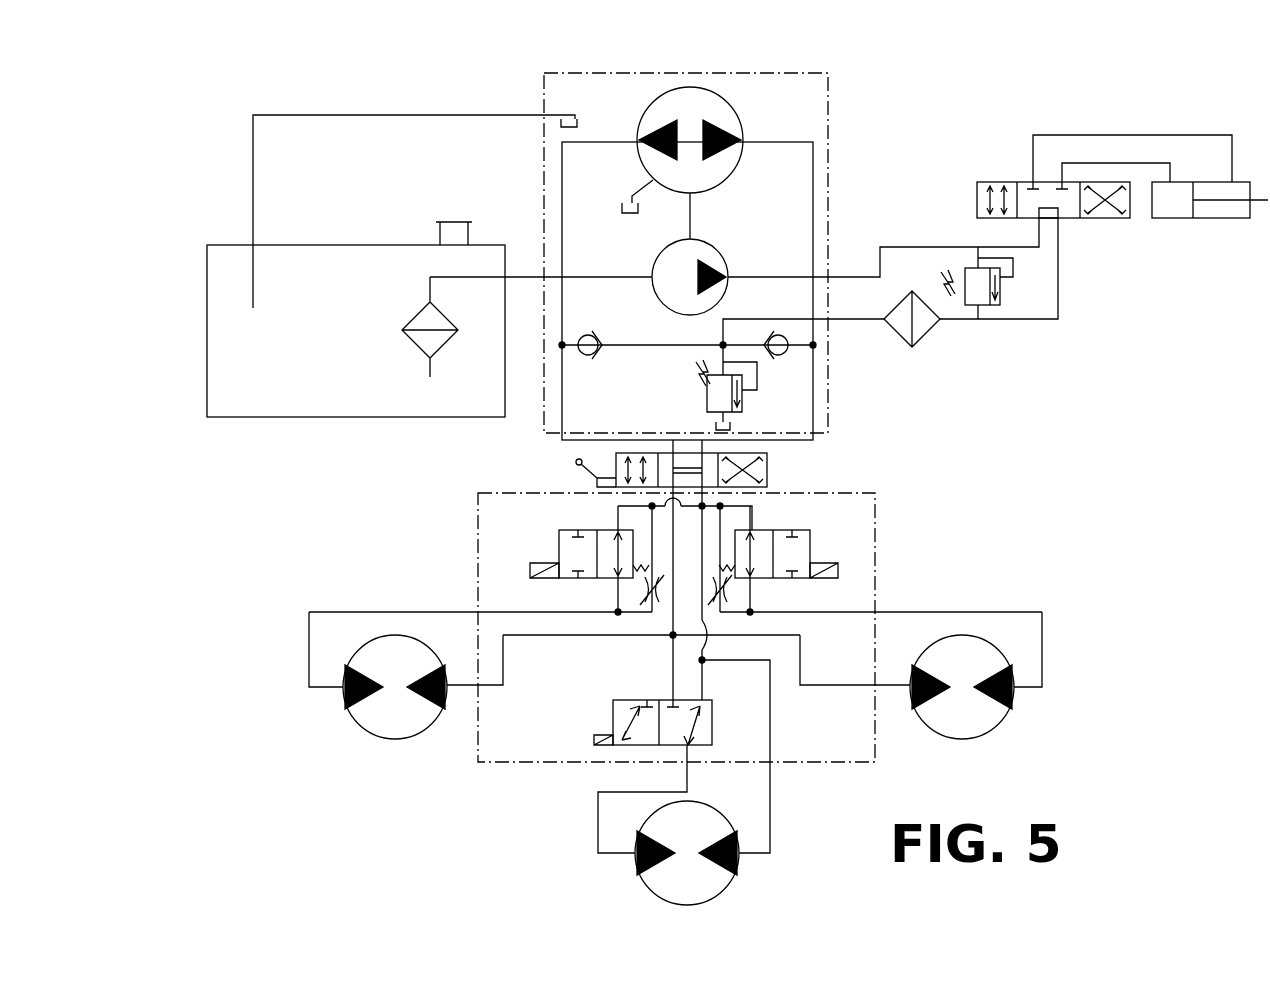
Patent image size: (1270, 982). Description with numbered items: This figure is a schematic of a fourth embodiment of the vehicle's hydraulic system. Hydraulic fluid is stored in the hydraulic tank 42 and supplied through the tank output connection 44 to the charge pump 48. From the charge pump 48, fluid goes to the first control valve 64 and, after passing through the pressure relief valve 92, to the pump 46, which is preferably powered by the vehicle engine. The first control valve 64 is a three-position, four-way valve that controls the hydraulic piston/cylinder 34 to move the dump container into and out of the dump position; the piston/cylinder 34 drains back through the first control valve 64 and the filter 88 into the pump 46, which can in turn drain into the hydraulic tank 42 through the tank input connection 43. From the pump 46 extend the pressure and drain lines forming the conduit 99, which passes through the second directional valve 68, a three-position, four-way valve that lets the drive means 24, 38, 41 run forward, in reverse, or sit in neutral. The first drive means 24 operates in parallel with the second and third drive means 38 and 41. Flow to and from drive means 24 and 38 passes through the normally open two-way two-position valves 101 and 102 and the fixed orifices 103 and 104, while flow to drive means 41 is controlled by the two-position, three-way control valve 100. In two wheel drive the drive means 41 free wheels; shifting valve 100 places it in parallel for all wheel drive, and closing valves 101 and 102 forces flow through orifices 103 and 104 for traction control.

The first hydraulic drive means 24 is at (373, 738).
The hydraulic piston/cylinder 34 is at (1215, 220).
The second hydraulic drive means 38 is at (1000, 718).
The third hydraulic drive means 41 is at (690, 905).
The hydraulic tank 42 is at (383, 420).
The tank input connection 43 is at (380, 115).
The tank output connection 44 is at (516, 280).
The pump 46 is at (735, 100).
The charge pump 48 is at (710, 247).
The first control valve 64 is at (975, 200).
The second directional control valve 68 is at (767, 466).
The filter 88 is at (893, 332).
The pressure relief valve 92 is at (965, 272).
The conduit 99 is at (577, 442).
The two-position three-way control valve 100 is at (612, 710).
The normally open two-way two-position valve 101 is at (573, 530).
The normally open two-way two-position valve 102 is at (775, 530).
The fixed orifice 103 is at (640, 593).
The fixed orifice 104 is at (727, 590).